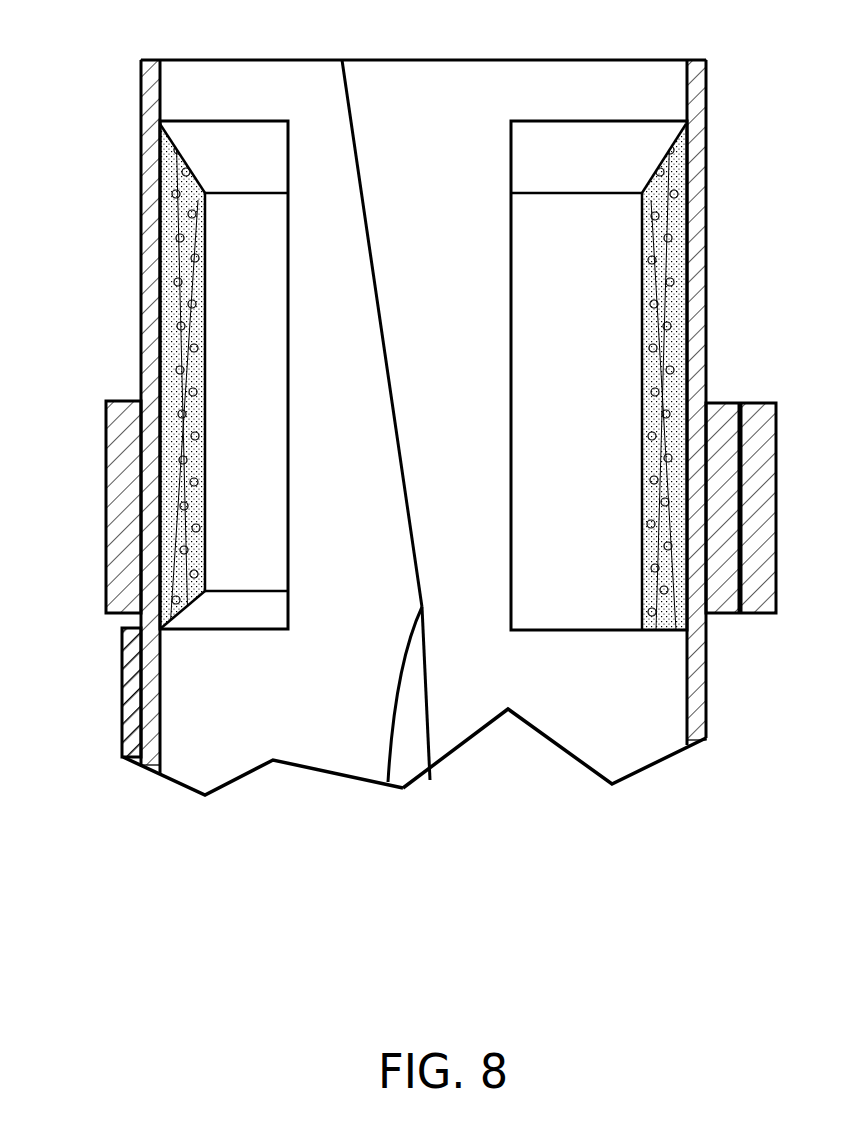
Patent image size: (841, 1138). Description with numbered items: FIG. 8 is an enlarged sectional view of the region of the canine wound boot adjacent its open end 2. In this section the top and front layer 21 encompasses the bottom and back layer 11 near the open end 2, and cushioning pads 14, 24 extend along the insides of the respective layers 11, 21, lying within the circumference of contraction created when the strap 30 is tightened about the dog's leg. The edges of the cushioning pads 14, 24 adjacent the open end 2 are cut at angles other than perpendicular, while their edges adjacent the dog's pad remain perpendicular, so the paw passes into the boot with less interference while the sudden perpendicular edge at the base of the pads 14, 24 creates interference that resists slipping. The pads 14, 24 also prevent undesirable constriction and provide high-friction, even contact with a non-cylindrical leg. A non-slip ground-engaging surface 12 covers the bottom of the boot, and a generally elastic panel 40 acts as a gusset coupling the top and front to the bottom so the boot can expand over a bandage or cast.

The open end 2 is at (428, 59).
The bottom and back layer 11 is at (152, 67).
The non-slip ground-engaging surface 12 is at (128, 700).
The cushioning pad 14 is at (190, 340).
The top and front layer 21 is at (706, 59).
The cushioning pad 24 is at (662, 395).
The strap 30 is at (112, 412).
The elastic panel 40 is at (403, 773).